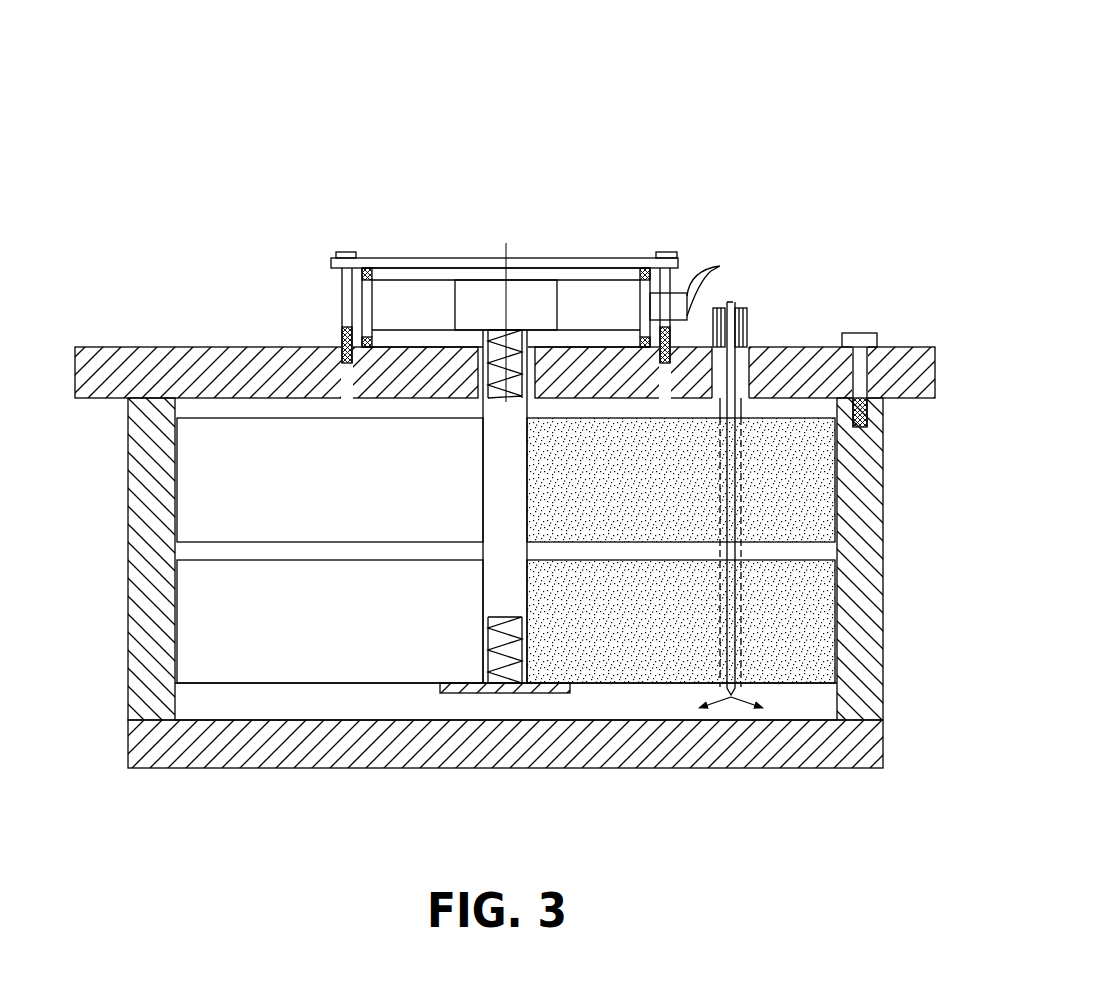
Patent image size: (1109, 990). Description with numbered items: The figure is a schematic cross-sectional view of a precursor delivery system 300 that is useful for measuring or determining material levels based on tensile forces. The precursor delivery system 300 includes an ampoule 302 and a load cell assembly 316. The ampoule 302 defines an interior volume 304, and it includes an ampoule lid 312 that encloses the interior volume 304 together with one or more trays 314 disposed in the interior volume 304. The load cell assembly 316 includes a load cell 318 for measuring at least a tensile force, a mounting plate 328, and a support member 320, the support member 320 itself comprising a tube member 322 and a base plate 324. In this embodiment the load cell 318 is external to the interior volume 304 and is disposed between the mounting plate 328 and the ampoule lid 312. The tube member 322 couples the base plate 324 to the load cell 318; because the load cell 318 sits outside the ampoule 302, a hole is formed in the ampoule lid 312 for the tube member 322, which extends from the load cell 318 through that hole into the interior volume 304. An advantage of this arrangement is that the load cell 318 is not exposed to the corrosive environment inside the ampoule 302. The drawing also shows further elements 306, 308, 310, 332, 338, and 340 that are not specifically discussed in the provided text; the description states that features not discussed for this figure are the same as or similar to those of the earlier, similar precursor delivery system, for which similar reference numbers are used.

The precursor delivery system 300 is at (719, 94).
The ampoule 302 is at (135, 221).
The interior volume 304 is at (506, 701).
The base 306 is at (872, 747).
The side walls 308 is at (136, 683).
The probe 310 is at (747, 658).
The ampoule lid 312 is at (912, 360).
The trays 314 is at (506, 550).
The load cell assembly 316 is at (285, 225).
The load cell 318 is at (429, 307).
The support member 320 is at (431, 595).
The tube member 322 is at (518, 585).
The base plate 324 is at (497, 693).
The mounting plate 328 is at (389, 262).
The connector 332 is at (720, 283).
The actuator housing 338 is at (629, 268).
The upper spring 340 is at (627, 340).